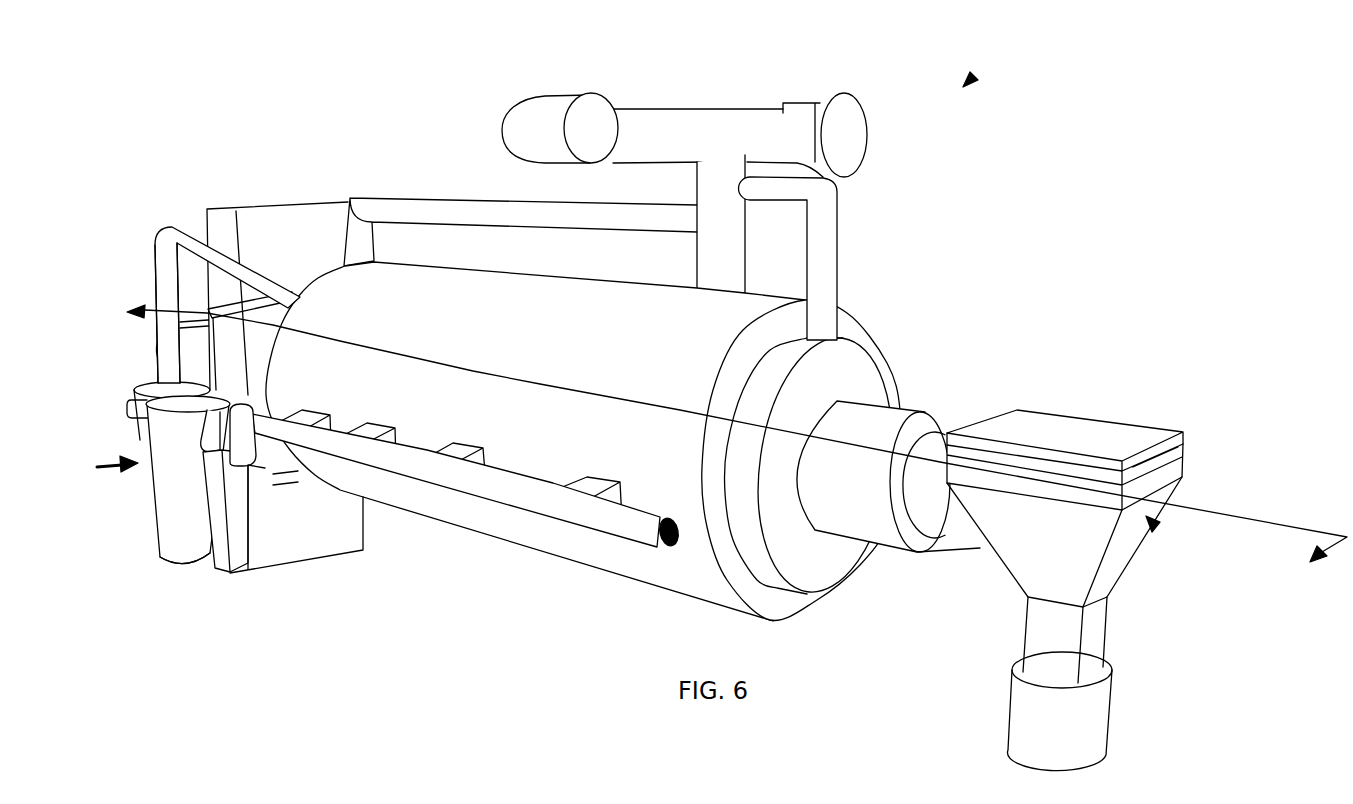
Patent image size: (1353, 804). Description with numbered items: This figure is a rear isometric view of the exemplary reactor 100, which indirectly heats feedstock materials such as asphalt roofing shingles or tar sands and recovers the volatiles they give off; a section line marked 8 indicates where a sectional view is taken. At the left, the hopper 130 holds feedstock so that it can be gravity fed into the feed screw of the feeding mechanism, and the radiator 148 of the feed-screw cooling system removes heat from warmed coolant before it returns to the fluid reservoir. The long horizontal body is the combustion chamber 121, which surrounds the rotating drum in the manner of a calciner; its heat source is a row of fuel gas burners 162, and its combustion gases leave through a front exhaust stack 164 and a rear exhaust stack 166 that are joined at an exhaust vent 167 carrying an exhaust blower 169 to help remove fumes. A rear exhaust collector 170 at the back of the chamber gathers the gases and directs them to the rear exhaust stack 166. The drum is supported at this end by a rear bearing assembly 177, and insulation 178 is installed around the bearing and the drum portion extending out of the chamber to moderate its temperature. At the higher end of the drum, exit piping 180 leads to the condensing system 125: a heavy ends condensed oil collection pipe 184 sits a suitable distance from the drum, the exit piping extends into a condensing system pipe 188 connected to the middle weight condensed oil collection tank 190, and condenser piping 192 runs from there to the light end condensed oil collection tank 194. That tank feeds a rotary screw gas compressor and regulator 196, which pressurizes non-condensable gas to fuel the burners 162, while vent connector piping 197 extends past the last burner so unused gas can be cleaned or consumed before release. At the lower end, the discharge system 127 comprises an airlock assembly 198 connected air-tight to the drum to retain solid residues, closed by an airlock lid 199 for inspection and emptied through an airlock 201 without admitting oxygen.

The reactor 100 is at (975, 75).
The combustion chamber 121 is at (516, 264).
The condensing system 125 is at (101, 467).
The discharge system 127 is at (1153, 530).
The hopper 130 is at (277, 209).
The radiator 148 is at (268, 570).
The fuel gas burners 162 is at (326, 412).
The front exhaust stack 164 is at (377, 232).
The rear exhaust stack 166 is at (806, 248).
The exhaust vent 167 is at (720, 120).
The exhaust blower 169 is at (840, 108).
The rear exhaust collector 170 is at (833, 595).
The rear bearing assembly 177 is at (960, 552).
The insulation 178 is at (943, 417).
The exit piping 180 is at (167, 225).
The heavy ends condensed oil collection pipe 184 is at (239, 290).
The condensing system pipe 188 is at (154, 284).
The middle weight condensed oil collection tank 190 is at (153, 531).
The condenser piping 192 is at (128, 409).
The light end condensed oil collection tank 194 is at (162, 558).
The rotary screw gas compressor and regulator 196 is at (213, 566).
The vent connector piping 197 is at (657, 549).
The airlock assembly 198 is at (1183, 480).
The airlock lid 199 is at (1153, 443).
The airlock 201 is at (1098, 617).
The section line 8- 8 is at (726, 450).